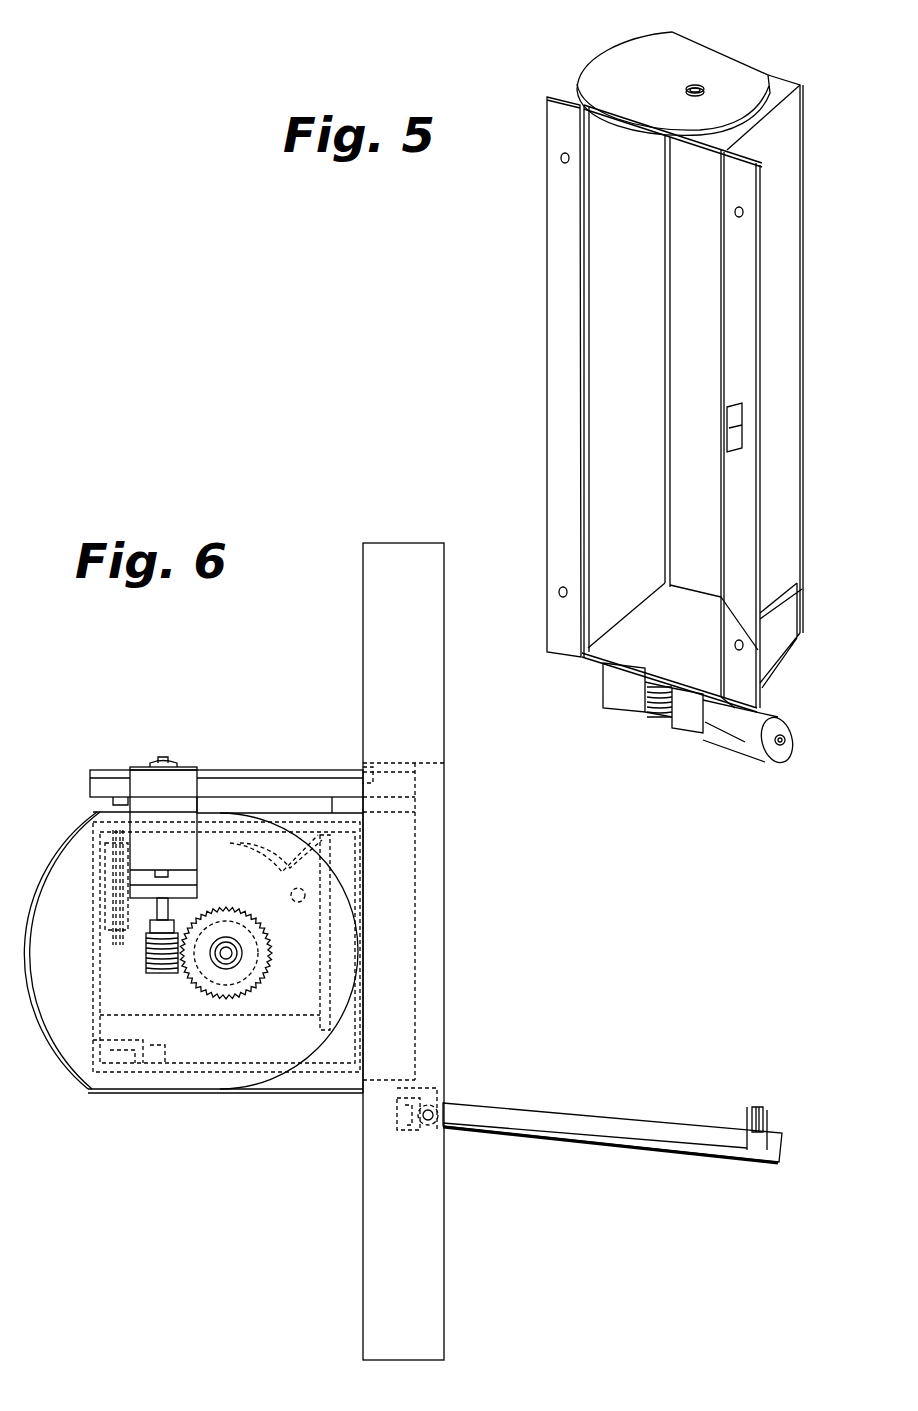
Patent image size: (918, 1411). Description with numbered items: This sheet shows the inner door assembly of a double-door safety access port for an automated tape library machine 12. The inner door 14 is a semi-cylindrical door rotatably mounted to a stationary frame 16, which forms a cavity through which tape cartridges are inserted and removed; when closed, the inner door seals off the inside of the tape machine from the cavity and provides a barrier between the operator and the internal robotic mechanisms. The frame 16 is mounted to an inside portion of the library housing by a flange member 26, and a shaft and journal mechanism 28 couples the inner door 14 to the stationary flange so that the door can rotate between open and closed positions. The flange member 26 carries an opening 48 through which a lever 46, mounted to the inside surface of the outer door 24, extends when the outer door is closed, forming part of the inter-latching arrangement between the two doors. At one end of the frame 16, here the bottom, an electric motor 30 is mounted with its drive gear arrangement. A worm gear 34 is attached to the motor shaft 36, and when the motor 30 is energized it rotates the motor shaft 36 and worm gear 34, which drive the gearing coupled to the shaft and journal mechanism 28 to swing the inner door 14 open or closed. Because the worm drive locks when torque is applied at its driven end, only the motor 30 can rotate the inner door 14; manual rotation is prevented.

In FIG. 6, the automated tape library machine 12 is at (363, 1268).
In FIG. 6, the inner door 14 is at (53, 1060).
In FIG. 5, the stationary frame 16 is at (808, 537).
In FIG. 6, the stationary frame 16 is at (303, 770).
In FIG. 6, the outer door 24 is at (584, 1143).
In FIG. 5, the flange member 26 is at (547, 273).
In FIG. 6, the shaft and journal mechanism 28 is at (211, 968).
In FIG. 5, the electric motor 30 is at (772, 706).
In FIG. 6, the electric motor 30 is at (205, 785).
In FIG. 5, the worm gear 34 is at (658, 717).
In FIG. 6, the worm gear 34 is at (157, 978).
In FIG. 6, the motor shaft 36 is at (172, 906).
In FIG. 6, the lever 46 is at (767, 1120).
In FIG. 5, the opening 48 is at (737, 428).